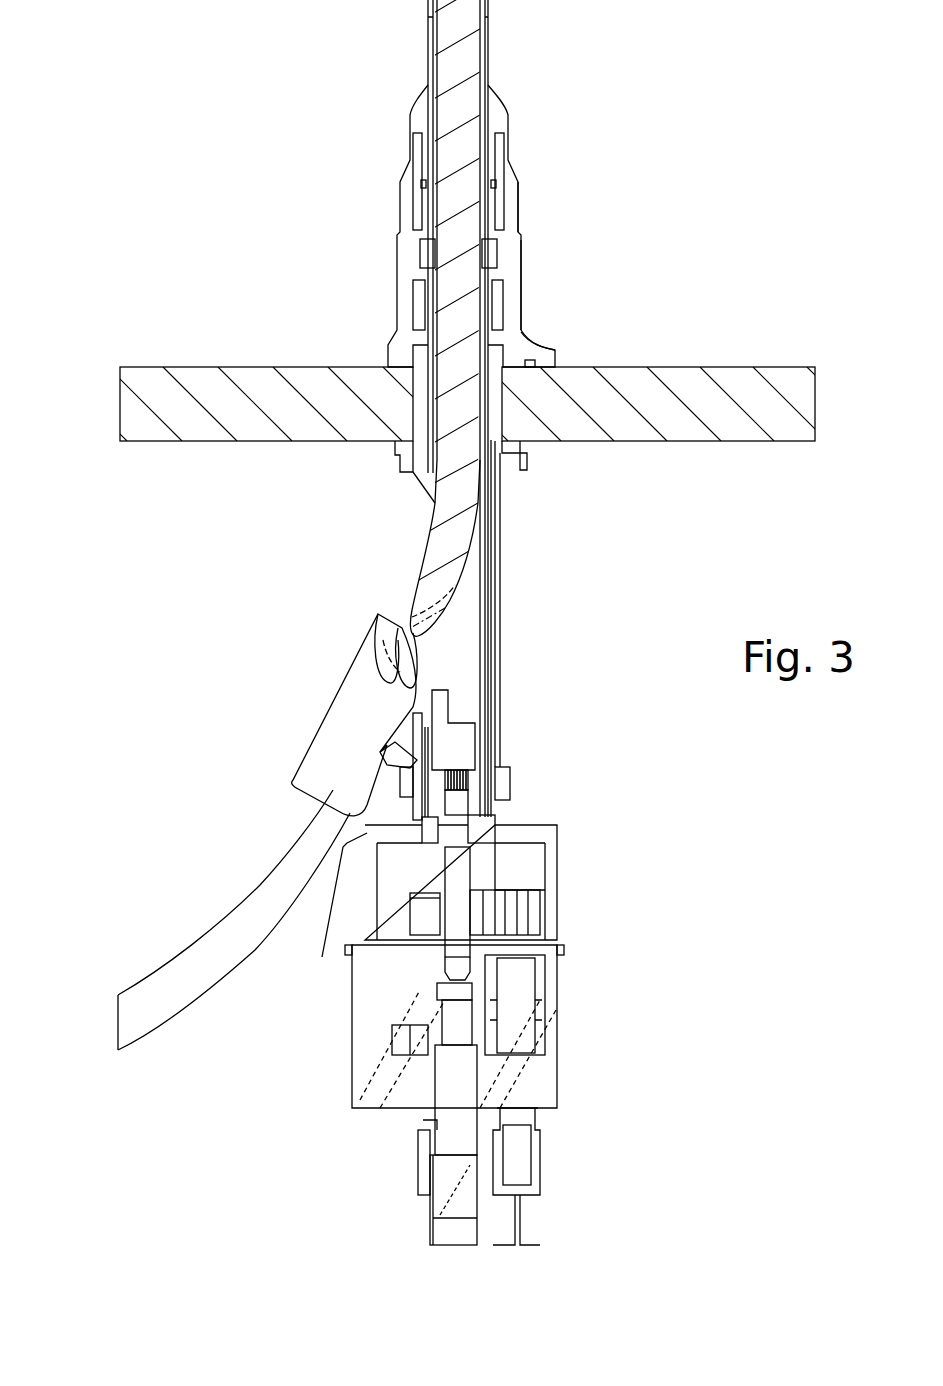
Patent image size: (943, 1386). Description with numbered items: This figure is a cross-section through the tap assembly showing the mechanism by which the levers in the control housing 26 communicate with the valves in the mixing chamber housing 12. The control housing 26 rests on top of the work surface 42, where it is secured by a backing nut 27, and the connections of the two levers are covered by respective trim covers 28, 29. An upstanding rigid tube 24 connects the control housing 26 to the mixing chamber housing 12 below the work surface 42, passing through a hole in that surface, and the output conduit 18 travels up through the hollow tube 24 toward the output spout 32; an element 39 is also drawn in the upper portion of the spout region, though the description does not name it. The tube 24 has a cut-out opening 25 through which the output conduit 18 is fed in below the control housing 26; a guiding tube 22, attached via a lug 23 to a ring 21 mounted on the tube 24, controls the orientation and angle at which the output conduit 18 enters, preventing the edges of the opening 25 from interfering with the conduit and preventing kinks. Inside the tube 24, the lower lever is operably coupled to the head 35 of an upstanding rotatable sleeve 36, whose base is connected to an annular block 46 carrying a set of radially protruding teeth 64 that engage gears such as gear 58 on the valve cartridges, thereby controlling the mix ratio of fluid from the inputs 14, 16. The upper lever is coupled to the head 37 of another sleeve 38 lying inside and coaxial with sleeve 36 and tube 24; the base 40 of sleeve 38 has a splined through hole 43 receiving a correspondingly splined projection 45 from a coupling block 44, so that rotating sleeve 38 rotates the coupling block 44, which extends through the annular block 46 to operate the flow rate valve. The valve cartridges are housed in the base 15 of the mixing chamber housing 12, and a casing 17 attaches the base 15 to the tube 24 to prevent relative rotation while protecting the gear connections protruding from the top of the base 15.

The mixing chamber housing 12 is at (560, 985).
The fluid input 14 is at (503, 1150).
The base 15 is at (543, 1088).
The fluid input 16 is at (422, 1165).
The casing 17 is at (557, 850).
The output conduit 18 is at (203, 965).
The ring 21 is at (513, 782).
The guiding tube 22 is at (325, 753).
The lug 23 is at (385, 775).
The upstanding rigid tube 24 is at (498, 653).
The cut-out opening 25 is at (423, 490).
The control housing 26 is at (520, 348).
The backing nut 27 is at (510, 455).
The trim cover 28 is at (520, 305).
The trim cover 29 is at (518, 265).
The output spout 32 is at (493, 115).
The head 35 is at (423, 302).
The rotatable sleeve 36 is at (490, 632).
The head 37 is at (417, 262).
The sleeve 38 is at (487, 558).
The slot 39 is at (507, 169).
The base 40 is at (458, 803).
The work surface 42 is at (680, 432).
The splined through hole 43 is at (477, 780).
The coupling block 44 is at (462, 830).
The splined projection 45 is at (322, 957).
The annular block 46 is at (482, 843).
The gear 58 is at (517, 913).
The radially protruding teeth 64 is at (430, 917).